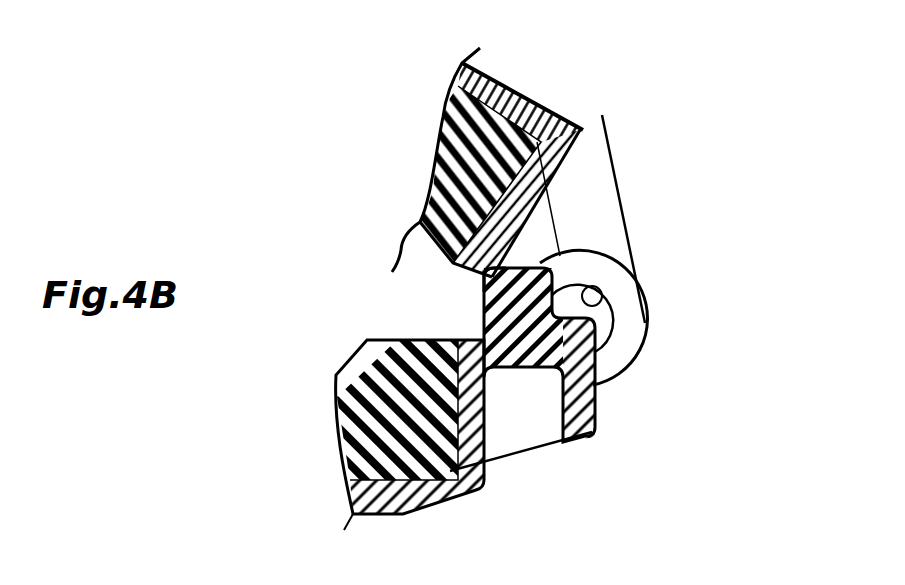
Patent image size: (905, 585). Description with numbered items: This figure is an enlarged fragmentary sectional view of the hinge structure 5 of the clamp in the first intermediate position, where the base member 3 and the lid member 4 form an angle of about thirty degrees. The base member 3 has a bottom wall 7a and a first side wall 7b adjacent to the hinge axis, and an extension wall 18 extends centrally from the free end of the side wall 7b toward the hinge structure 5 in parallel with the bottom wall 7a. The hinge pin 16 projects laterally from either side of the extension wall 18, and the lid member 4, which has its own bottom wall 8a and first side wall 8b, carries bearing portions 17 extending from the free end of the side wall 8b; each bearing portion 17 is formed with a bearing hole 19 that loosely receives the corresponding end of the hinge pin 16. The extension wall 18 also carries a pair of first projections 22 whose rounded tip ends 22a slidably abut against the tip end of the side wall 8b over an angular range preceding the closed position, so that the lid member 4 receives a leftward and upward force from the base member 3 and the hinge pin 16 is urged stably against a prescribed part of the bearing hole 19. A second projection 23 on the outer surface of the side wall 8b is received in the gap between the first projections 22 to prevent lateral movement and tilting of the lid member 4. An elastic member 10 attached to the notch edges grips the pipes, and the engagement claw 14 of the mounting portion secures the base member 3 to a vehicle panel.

The base member 3 is at (450, 504).
The lid member 4 is at (560, 95).
The hinge structure 5 is at (690, 155).
The bottom wall 7a is at (363, 513).
The first side wall 7b is at (477, 429).
The bottom wall 8a is at (483, 90).
The first side wall 8b is at (556, 168).
The elastic member 10 is at (383, 343).
The engagement claw 14 is at (431, 0).
The hinge pin 16 is at (630, 364).
The bearing portion 17 is at (627, 333).
The extension wall 18 is at (547, 443).
The bearing hole 19 is at (603, 300).
The first projection 22 is at (484, 318).
The tip end 22a is at (488, 274).
The second projection 23 is at (541, 230).